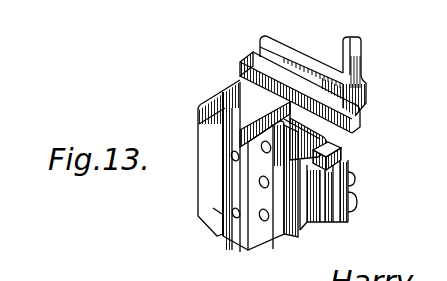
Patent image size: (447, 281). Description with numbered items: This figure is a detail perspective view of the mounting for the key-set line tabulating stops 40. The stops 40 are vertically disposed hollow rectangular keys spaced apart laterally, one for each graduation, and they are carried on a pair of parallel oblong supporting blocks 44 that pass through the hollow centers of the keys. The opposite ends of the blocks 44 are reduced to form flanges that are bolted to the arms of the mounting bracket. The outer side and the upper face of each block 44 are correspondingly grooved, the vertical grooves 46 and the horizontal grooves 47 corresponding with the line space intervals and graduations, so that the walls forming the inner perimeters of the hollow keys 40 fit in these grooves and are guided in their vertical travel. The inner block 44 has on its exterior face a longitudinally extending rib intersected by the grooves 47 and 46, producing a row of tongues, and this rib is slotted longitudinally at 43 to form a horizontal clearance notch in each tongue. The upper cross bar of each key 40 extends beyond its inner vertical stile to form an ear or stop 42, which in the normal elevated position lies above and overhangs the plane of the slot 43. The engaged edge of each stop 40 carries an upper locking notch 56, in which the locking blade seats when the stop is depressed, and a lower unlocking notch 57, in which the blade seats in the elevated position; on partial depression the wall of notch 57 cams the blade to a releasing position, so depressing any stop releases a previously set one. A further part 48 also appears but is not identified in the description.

The line tabulating stops 40 is at (301, 50).
The ear or stop 42 is at (371, 96).
The longitudinal slot 43 is at (357, 131).
The supporting blocks 44 is at (206, 125).
The vertical grooves 46 is at (301, 220).
The horizontal grooves 47 is at (250, 62).
The pin 48 is at (223, 205).
The upper locking notch 56 is at (353, 182).
The lower unlocking notch 57 is at (353, 205).